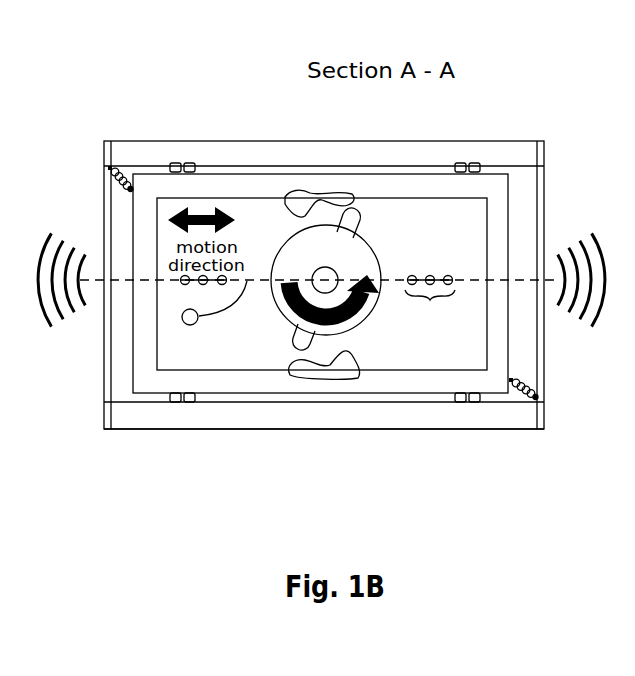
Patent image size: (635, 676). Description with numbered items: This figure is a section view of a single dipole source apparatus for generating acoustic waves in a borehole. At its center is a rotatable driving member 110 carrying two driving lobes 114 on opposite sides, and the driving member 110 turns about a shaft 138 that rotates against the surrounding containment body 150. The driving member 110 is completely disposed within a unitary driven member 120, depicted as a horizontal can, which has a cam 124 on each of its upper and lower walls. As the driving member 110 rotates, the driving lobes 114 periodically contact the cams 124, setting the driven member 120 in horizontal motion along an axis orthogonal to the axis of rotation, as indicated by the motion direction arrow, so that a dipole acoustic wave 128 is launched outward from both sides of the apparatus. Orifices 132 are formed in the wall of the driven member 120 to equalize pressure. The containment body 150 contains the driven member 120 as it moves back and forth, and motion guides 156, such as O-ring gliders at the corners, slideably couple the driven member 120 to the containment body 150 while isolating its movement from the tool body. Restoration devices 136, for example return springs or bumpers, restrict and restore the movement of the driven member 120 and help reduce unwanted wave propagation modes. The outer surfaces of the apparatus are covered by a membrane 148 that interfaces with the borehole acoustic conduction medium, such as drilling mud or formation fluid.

The rotatable driving member 110 is at (378, 253).
The driving lobe 114 is at (358, 225).
The unitary driven member 120 is at (132, 327).
The cam 124 is at (320, 192).
The dipole acoustic wave 128 is at (67, 213).
The orifices 132 is at (430, 299).
The restoration devices 136 is at (124, 173).
The shaft 138 is at (321, 268).
The membrane 148 is at (545, 175).
The containment body 150 is at (283, 432).
The motion guides 156 is at (176, 163).